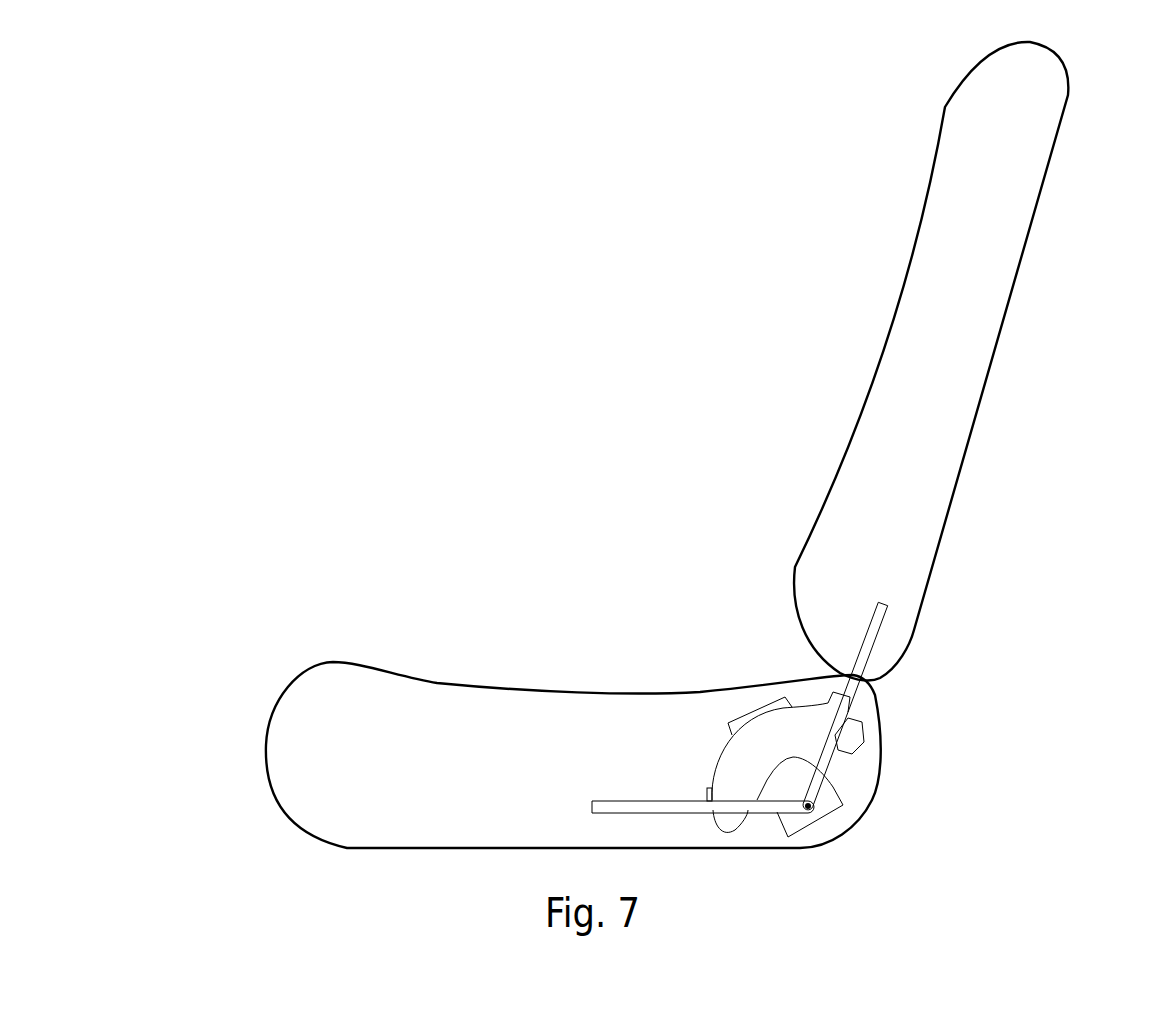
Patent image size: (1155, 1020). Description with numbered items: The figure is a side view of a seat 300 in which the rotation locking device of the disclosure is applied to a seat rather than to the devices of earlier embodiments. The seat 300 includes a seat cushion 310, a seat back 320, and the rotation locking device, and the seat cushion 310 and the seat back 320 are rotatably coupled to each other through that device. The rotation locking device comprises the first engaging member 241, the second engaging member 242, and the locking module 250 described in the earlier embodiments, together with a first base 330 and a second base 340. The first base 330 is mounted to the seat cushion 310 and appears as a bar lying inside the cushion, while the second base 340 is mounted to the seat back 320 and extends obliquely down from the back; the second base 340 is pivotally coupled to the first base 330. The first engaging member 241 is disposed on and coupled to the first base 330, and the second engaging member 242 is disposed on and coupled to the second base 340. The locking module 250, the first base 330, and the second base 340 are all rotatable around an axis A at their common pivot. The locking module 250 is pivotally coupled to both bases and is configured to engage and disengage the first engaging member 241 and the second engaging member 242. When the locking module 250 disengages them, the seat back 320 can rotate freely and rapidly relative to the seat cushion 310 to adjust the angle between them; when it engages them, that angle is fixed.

The seat 300 is at (228, 42).
The seat cushion 310 is at (450, 740).
The seat back 320 is at (935, 409).
The first base 330 is at (622, 806).
The second base 340 is at (878, 625).
The locking module 250 is at (820, 694).
The first engaging member 241 is at (725, 770).
The second engaging member 242 is at (853, 728).
The axis A is at (812, 805).